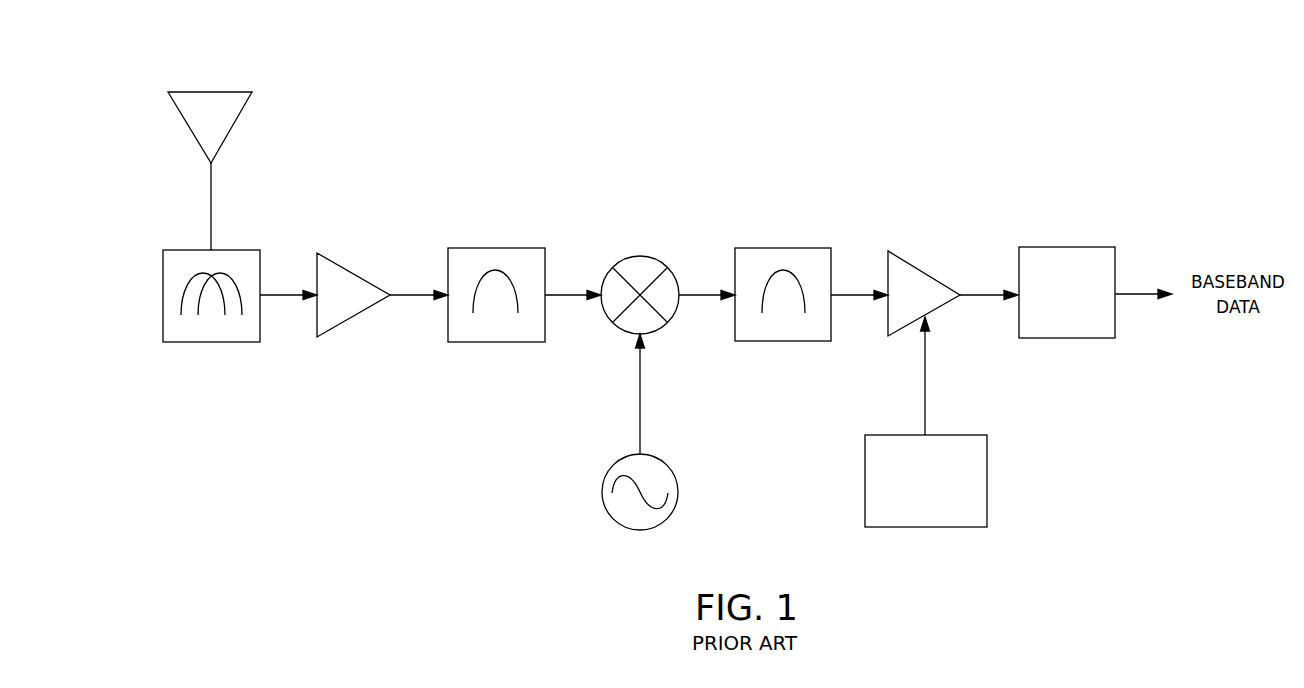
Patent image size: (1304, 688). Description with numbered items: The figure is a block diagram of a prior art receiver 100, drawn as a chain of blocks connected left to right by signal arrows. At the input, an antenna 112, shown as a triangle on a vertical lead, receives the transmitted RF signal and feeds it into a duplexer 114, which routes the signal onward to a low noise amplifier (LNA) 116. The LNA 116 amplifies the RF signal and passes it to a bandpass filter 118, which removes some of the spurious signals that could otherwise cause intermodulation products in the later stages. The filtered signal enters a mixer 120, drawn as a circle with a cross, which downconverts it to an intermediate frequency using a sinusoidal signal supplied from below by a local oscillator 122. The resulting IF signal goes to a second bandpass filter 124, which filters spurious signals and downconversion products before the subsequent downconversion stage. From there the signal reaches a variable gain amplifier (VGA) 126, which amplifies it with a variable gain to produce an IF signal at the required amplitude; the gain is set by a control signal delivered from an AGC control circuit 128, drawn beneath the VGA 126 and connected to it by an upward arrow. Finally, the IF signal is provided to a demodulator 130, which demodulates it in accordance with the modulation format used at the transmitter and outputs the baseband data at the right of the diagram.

The receiver 100 is at (1118, 113).
The antenna 112 is at (225, 91).
The duplexer 114 is at (240, 250).
The low noise amplifier (LNA) 116 is at (350, 272).
The bandpass filter 118 is at (493, 248).
The mixer 120 is at (641, 256).
The local oscillator 122 is at (658, 456).
The bandpass filter 124 is at (780, 248).
The variable gain amplifier (VGA) 126 is at (925, 273).
The AGC control circuit 128 is at (960, 435).
The demodulator 130 is at (1065, 247).